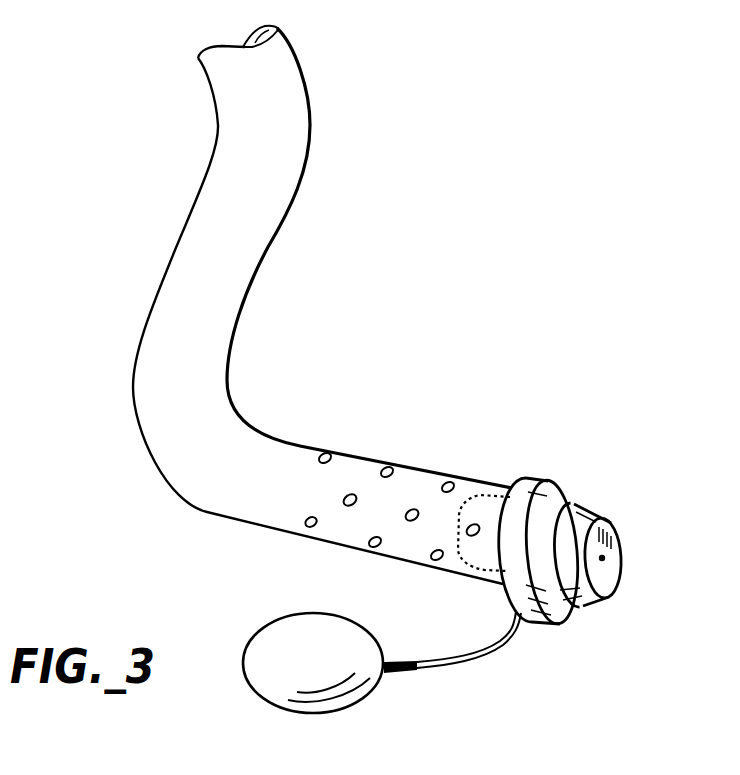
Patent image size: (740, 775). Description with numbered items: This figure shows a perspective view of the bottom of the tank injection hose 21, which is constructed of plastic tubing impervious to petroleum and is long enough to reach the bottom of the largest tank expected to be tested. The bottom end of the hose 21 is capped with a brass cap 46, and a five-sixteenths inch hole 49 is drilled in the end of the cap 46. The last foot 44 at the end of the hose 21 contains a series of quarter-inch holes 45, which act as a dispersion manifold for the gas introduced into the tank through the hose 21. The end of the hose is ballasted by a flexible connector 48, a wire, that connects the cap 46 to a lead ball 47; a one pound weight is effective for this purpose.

The tank injection hose 21 is at (302, 165).
The last foot 44 is at (327, 452).
The holes 45 is at (304, 530).
The brass cap 46 is at (617, 518).
The lead ball 47 is at (347, 704).
The flexible connector 48 is at (484, 666).
The hole 49 is at (603, 559).